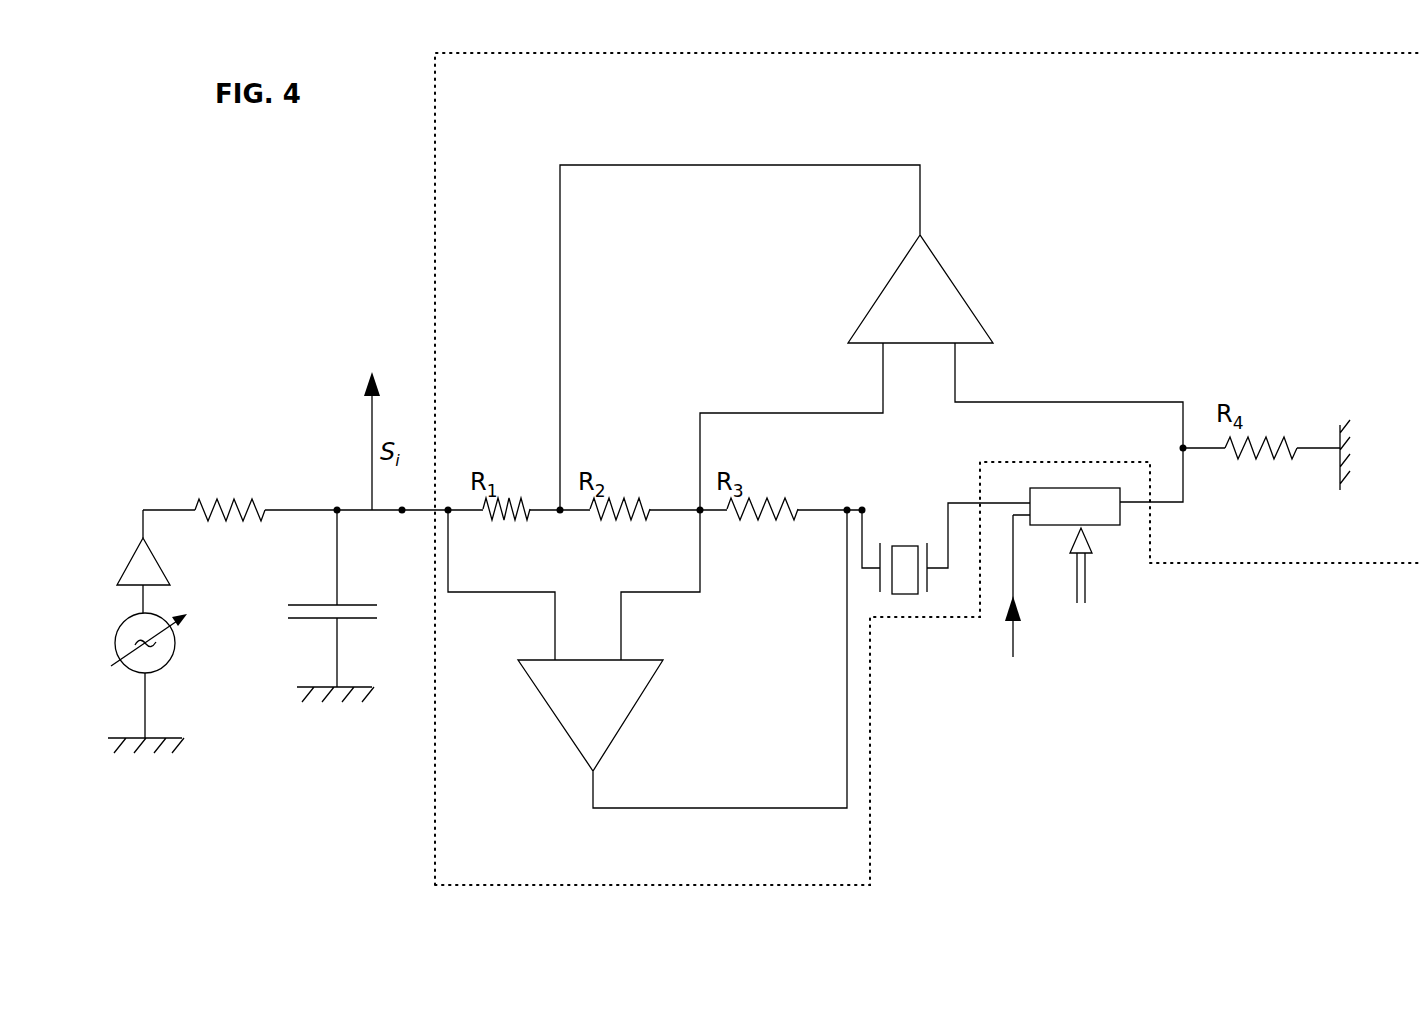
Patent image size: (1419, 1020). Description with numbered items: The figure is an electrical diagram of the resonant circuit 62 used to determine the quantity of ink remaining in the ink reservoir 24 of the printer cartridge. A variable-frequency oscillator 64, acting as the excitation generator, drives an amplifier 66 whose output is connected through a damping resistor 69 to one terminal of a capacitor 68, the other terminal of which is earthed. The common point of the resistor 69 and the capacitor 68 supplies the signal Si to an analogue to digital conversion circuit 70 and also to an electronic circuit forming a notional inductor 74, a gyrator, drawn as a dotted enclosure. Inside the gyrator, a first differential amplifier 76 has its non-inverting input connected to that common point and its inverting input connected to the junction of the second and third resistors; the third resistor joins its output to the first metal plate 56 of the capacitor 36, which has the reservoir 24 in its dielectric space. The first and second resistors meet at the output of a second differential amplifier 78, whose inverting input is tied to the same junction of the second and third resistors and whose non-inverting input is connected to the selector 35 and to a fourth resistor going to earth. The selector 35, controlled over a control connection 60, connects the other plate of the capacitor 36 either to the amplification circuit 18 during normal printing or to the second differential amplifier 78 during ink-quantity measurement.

The amplification circuit 18 is at (1014, 634).
The ink reservoir 24 is at (903, 592).
The selector 35 is at (1100, 512).
The capacitor 36 is at (936, 596).
The first metal plate 56 is at (882, 543).
The control connection 60 is at (1085, 592).
The resonant circuit 62 is at (286, 367).
The excitation generator 64 is at (165, 668).
The amplifier 66 is at (167, 567).
The capacitor 68 is at (300, 605).
The damping resistor 69 is at (232, 506).
The analogue to digital conversion circuit 70 is at (362, 427).
The notional inductor 74 is at (435, 219).
The first differential amplifier 76 is at (607, 712).
The second differential amplifier 78 is at (929, 332).